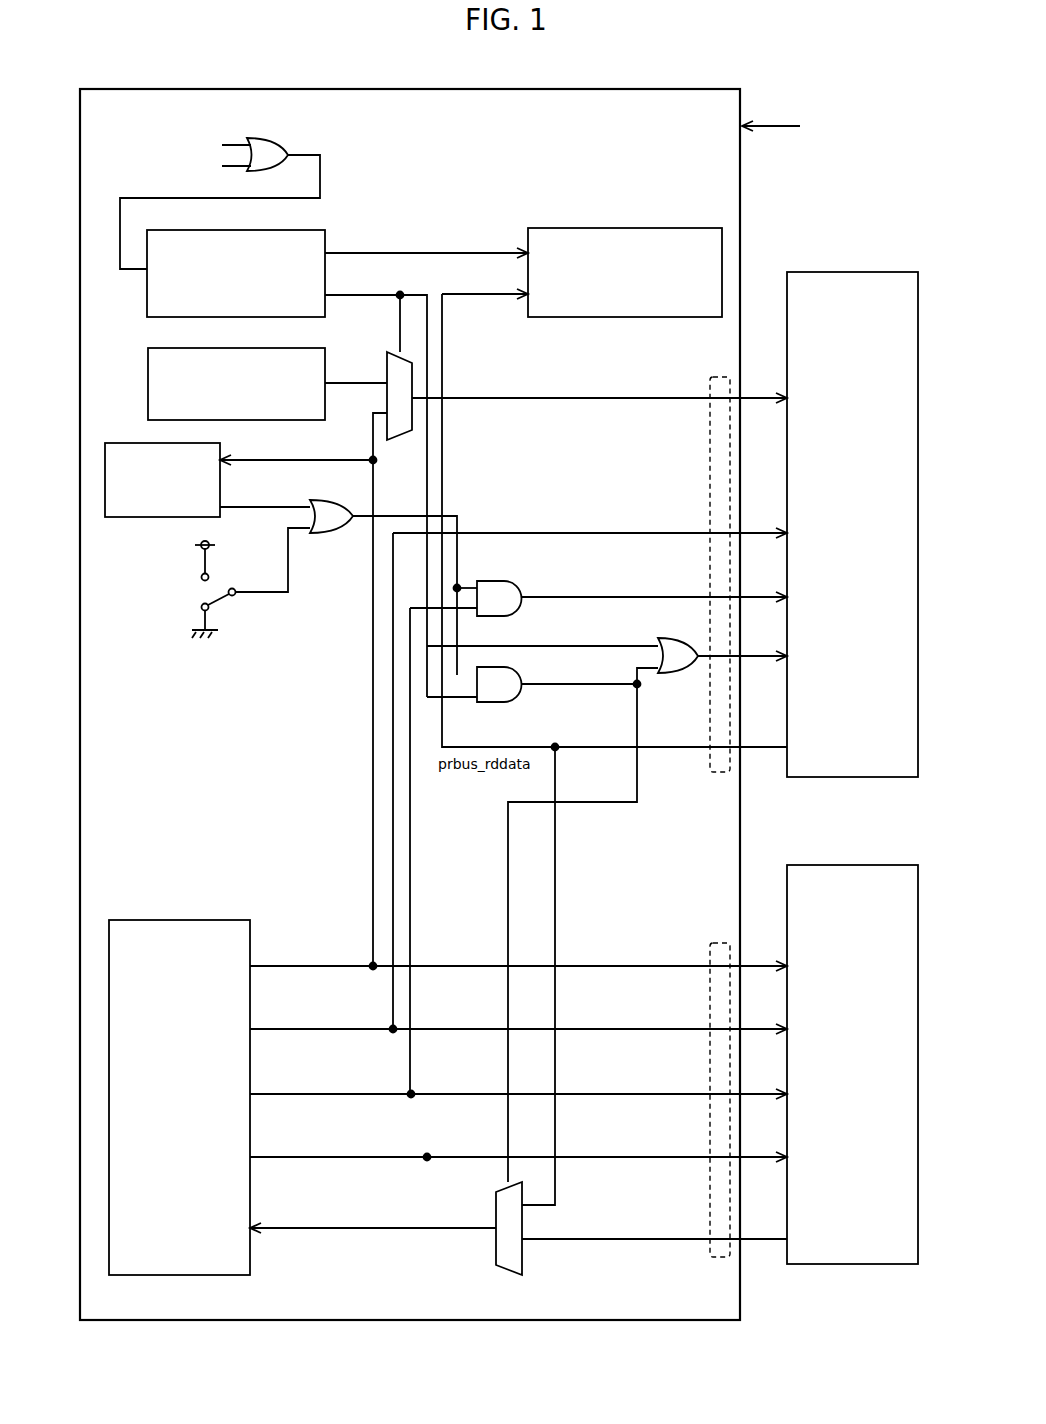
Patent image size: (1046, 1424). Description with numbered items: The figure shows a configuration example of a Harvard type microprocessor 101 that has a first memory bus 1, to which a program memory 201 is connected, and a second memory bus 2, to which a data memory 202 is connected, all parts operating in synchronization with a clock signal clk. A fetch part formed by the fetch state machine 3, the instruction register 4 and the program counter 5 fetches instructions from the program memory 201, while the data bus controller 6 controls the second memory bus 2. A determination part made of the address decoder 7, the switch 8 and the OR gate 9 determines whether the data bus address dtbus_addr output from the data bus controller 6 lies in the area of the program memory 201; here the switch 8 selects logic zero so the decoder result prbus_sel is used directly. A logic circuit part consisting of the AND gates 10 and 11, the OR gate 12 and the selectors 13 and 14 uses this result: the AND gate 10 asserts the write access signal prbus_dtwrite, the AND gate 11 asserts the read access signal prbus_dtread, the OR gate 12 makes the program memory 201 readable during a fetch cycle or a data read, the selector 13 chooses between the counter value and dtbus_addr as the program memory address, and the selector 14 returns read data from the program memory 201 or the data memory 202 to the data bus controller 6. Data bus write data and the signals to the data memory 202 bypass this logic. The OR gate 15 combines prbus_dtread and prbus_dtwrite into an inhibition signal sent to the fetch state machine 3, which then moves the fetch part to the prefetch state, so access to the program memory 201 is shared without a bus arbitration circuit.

The Harvard type microprocessor 101 is at (412, 89).
The OR gate 15 is at (266, 139).
The fetch state machine 3 is at (313, 230).
The instruction register 4 is at (625, 228).
The program counter 5 is at (313, 348).
The selector 13 is at (395, 441).
The address decoder 7 is at (163, 518).
The switch 8 is at (190, 592).
The OR gate 9 is at (325, 535).
The AND gate 10 is at (498, 581).
The AND gate 11 is at (498, 703).
The OR gate 12 is at (672, 675).
The first memory bus 1 is at (722, 376).
The program memory 201 is at (855, 272).
The data memory 202 is at (852, 865).
The second memory bus 2 is at (722, 943).
The data bus controller 6 is at (180, 920).
The selector 14 is at (505, 1270).